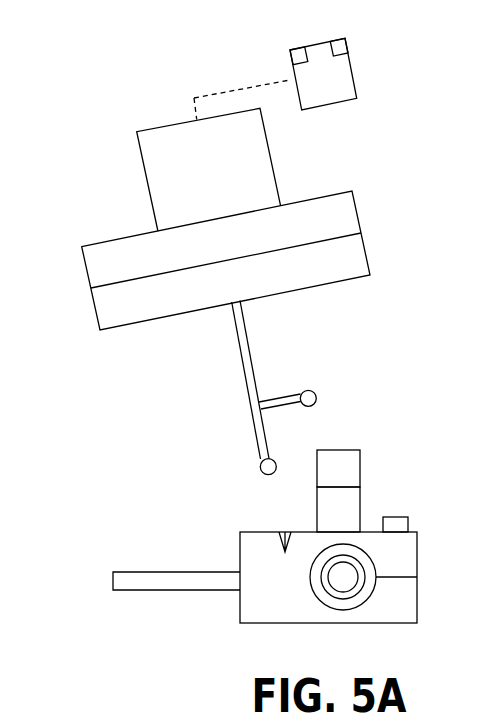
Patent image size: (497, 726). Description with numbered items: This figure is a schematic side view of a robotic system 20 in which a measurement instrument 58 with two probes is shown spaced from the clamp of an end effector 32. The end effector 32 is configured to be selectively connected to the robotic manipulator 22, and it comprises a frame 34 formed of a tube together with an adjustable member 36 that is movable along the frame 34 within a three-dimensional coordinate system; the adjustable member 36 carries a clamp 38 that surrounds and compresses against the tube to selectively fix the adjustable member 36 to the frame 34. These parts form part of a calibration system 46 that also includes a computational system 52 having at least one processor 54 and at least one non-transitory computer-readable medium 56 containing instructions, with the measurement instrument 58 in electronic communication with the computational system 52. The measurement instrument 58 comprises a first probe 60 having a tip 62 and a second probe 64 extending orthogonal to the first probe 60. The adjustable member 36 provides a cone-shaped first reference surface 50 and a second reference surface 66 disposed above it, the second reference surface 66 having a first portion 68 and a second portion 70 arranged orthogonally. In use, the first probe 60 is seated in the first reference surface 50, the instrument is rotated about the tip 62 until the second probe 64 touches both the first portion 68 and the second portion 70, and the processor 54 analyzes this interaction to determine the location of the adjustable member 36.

The robotic system 20 is at (83, 68).
The robotic manipulator 22 is at (172, 135).
The end effector 32 is at (145, 530).
The frame 34 is at (358, 585).
The adjustable member 36 is at (185, 580).
The clamp 38 is at (247, 618).
The calibration system 46 is at (123, 432).
The first reference surface 50 is at (285, 532).
The computational system 52 is at (314, 56).
The processor 54 is at (295, 50).
The non-transitory computer-readable medium 56 is at (340, 45).
The measurement instrument 58 is at (357, 257).
The first probe 60 is at (270, 423).
The tip 62 is at (274, 470).
The second probe 64 is at (275, 398).
The second reference surface 66 is at (388, 462).
The first portion 68 is at (340, 485).
The second portion 70 is at (337, 457).